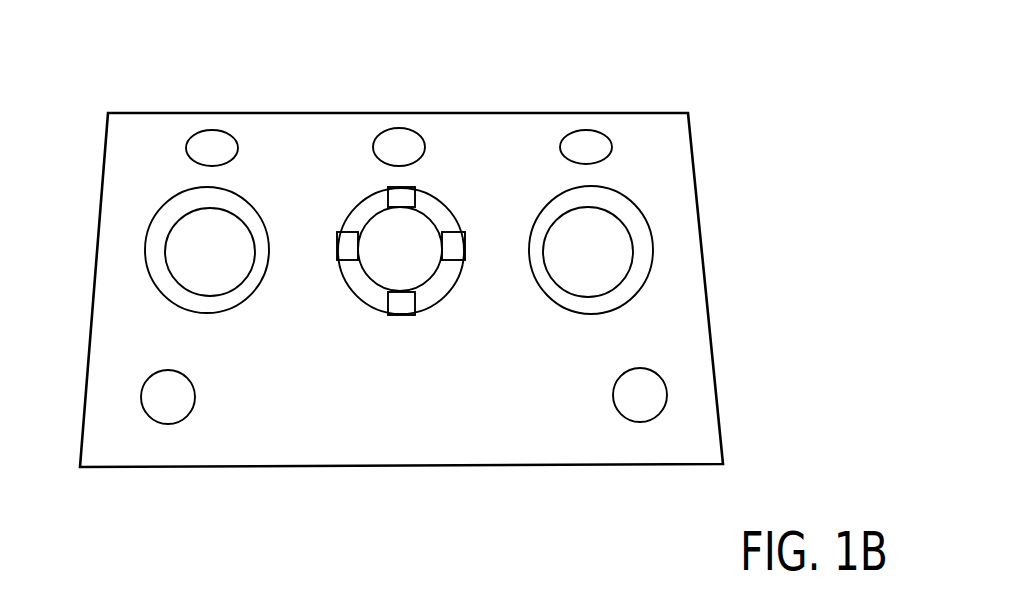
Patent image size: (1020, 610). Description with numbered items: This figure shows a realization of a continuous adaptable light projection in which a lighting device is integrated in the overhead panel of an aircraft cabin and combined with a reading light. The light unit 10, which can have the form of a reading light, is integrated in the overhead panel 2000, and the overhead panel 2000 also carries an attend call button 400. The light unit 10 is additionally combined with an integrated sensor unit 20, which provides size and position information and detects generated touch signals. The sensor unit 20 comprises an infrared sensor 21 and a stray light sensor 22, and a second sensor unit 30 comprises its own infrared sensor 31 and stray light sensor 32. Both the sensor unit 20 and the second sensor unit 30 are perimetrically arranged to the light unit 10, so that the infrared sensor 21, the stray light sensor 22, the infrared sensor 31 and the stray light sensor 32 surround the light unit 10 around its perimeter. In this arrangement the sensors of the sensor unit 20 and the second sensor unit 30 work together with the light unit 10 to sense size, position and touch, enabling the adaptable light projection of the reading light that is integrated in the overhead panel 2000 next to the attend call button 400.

The overhead panel 2000 is at (717, 297).
The attend call button 400 is at (642, 415).
The sensor unit 20 is at (392, 197).
The infrared sensor 21 is at (410, 200).
The stray light sensor 22 is at (342, 247).
The second sensor unit 30 is at (446, 378).
The infrared sensor 31 is at (458, 252).
The stray light sensor 32 is at (403, 305).
The light unit 10 is at (387, 243).